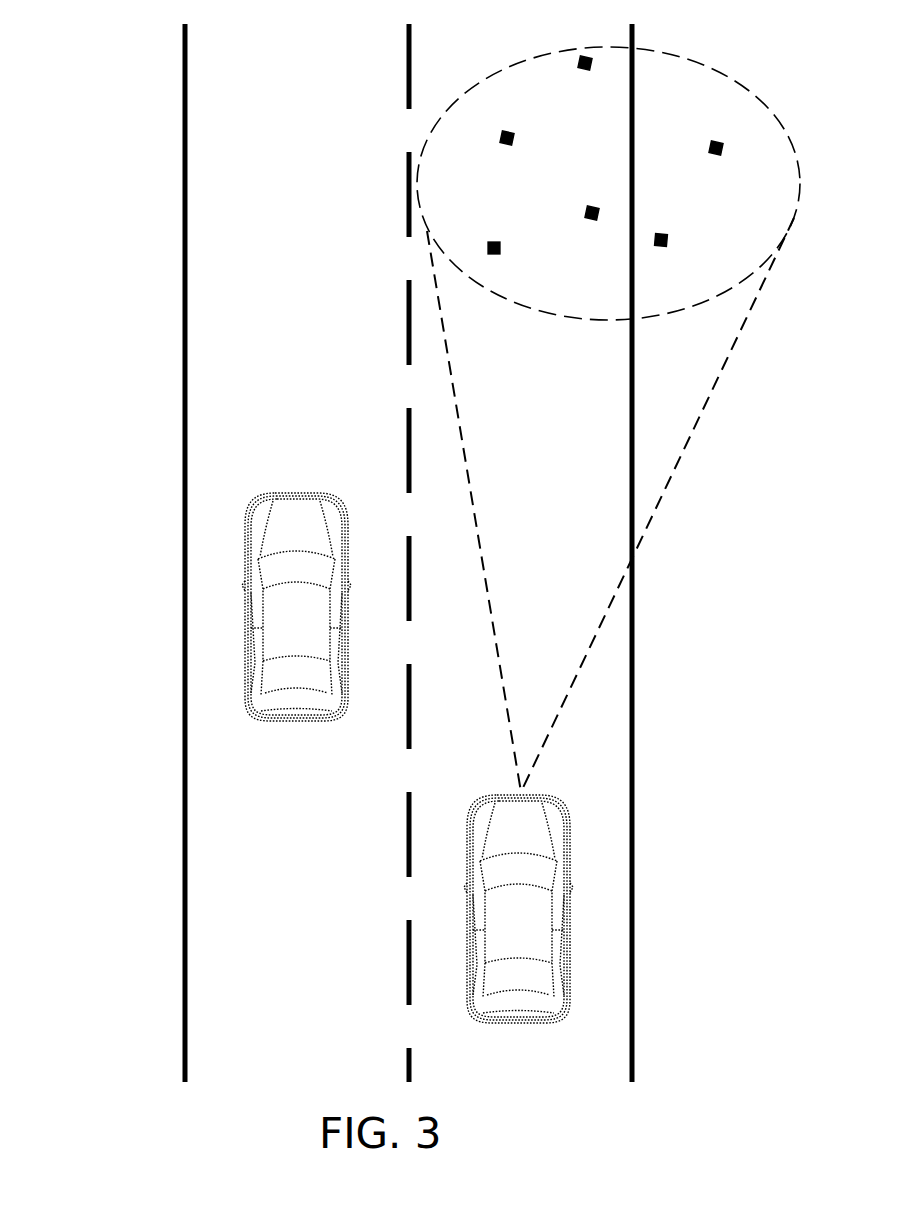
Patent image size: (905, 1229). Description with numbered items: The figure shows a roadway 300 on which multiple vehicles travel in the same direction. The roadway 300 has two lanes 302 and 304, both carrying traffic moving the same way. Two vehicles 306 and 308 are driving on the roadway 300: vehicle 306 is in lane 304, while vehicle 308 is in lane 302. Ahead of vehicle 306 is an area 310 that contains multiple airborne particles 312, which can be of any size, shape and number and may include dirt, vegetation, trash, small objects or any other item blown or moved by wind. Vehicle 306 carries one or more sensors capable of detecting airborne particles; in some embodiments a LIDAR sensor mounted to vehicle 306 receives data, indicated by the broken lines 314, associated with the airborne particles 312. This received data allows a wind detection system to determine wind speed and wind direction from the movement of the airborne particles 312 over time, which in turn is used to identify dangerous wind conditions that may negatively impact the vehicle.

The roadway 300 is at (139, 44).
The lane 302 is at (316, 1072).
The lane 304 is at (539, 1072).
The vehicle 306 is at (537, 936).
The vehicle 308 is at (316, 636).
The area 310 is at (512, 68).
The airborne particles 312 is at (590, 208).
The broken lines 314 is at (465, 450).